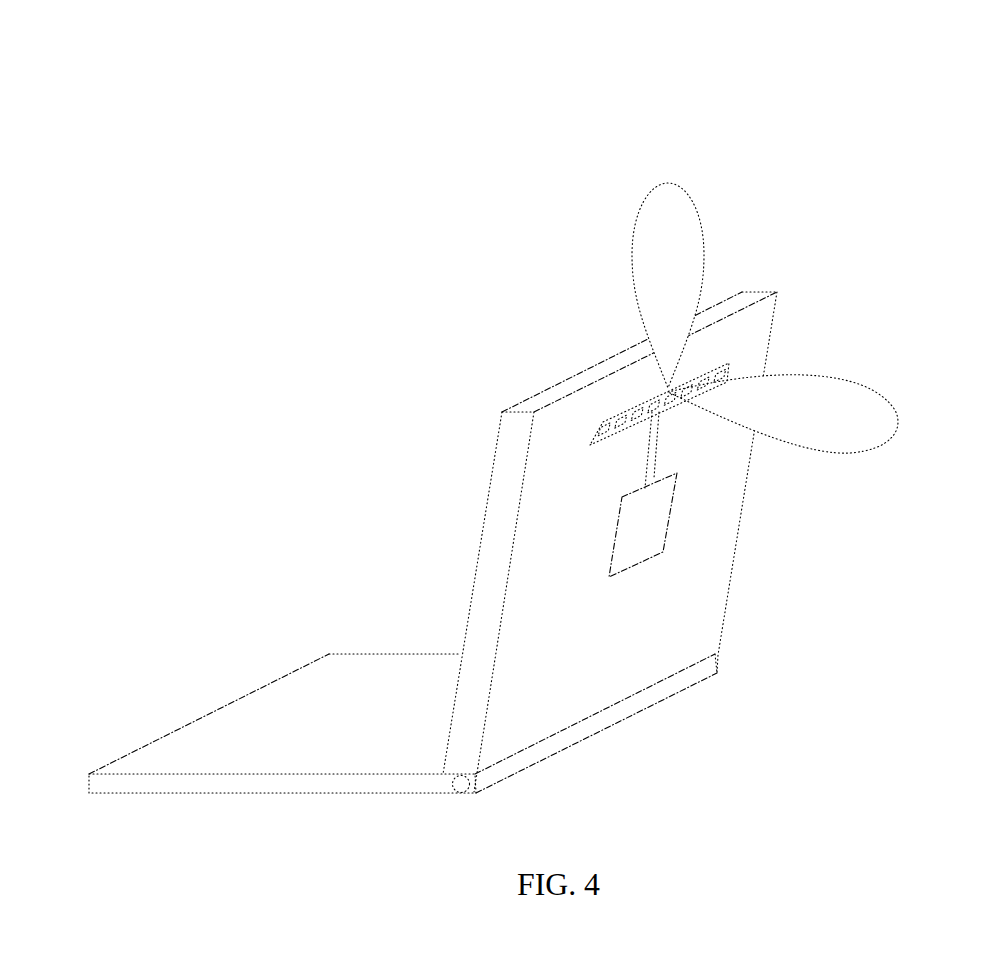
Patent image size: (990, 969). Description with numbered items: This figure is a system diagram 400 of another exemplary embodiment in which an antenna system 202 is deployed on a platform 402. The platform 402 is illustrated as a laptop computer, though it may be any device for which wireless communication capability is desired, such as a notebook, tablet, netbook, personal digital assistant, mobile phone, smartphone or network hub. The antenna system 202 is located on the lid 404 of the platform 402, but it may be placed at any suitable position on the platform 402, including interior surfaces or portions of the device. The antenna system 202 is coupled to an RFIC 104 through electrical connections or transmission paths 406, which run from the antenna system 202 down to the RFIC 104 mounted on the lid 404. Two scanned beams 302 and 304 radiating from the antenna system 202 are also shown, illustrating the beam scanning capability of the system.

The system diagram 400 is at (572, 40).
The platform 402 is at (127, 757).
The lid 404 is at (727, 605).
The antenna system 202 is at (600, 427).
The scanned beam 302 is at (633, 225).
The scanned beam 304 is at (893, 443).
The transmission paths 406 is at (652, 457).
The RFIC 104 is at (628, 567).